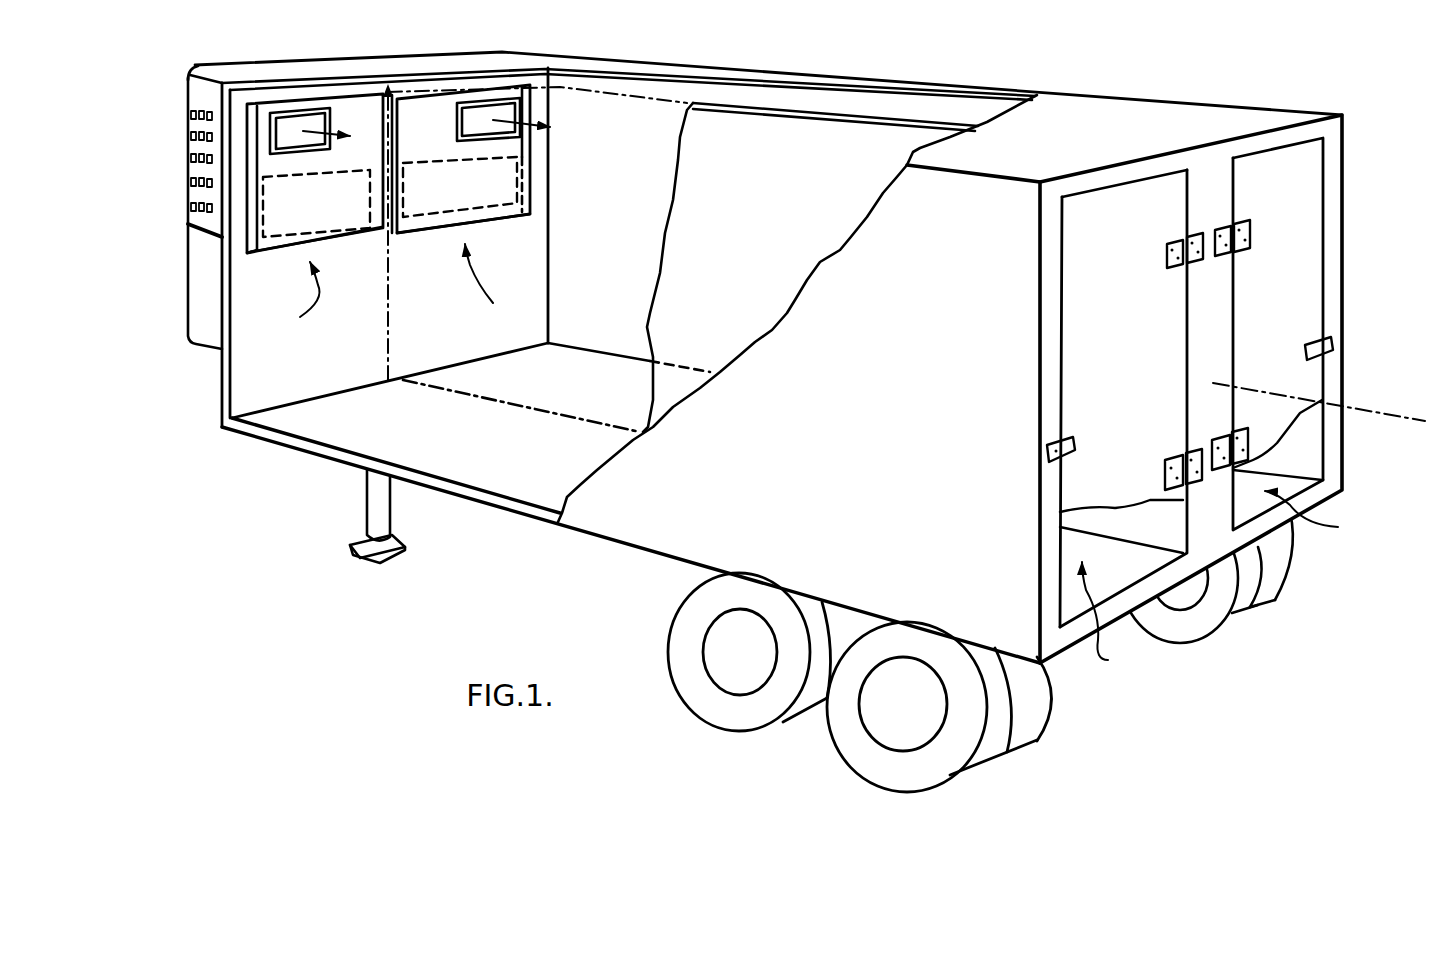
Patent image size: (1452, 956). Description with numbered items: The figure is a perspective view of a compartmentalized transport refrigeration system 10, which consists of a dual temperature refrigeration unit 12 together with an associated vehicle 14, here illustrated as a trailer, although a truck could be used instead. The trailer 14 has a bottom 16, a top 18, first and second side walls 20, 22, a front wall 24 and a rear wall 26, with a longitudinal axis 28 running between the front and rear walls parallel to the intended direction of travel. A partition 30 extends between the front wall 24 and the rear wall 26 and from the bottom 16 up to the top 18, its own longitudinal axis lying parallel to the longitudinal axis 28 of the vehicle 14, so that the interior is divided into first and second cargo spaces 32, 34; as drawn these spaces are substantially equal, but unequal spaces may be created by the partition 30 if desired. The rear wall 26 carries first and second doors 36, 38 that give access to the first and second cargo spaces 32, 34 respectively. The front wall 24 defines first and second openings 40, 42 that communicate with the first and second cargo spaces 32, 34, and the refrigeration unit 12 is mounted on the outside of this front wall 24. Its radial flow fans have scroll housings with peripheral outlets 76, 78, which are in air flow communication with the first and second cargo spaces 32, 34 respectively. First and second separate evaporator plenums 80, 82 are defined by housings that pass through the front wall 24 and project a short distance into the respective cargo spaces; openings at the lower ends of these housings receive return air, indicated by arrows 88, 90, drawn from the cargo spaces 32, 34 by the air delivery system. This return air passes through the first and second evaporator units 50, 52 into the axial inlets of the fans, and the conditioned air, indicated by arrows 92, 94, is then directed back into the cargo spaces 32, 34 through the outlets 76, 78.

The compartmentalized transport refrigeration system 10 is at (856, 63).
The dual temperature refrigeration unit 12 is at (187, 258).
The vehicle 14 is at (1168, 103).
The bottom 16 is at (520, 480).
The top 18 is at (998, 152).
The first side wall 20 is at (645, 517).
The second side wall 22 is at (916, 98).
The front wall 24 is at (256, 370).
The rear wall 26 is at (1198, 180).
The longitudinal axis 28 is at (1375, 418).
The partition 30 is at (663, 230).
The first cargo space 32 is at (1123, 422).
The second cargo space 34 is at (1303, 351).
The first door 36 is at (1100, 324).
The second door 38 is at (1300, 200).
The first opening 40 is at (243, 253).
The second opening 42 is at (522, 160).
The first evaporator unit 50 is at (291, 240).
The second evaporator unit 52 is at (447, 220).
The peripheral outlet 76 is at (288, 106).
The peripheral outlet 78 is at (462, 102).
The first evaporator plenum 80 is at (345, 243).
The second evaporator plenum 82 is at (490, 218).
The return air arrow 88 is at (336, 232).
The return air arrow 90 is at (462, 280).
The conditioned air arrow 92 is at (358, 103).
The conditioned air arrow 94 is at (562, 128).